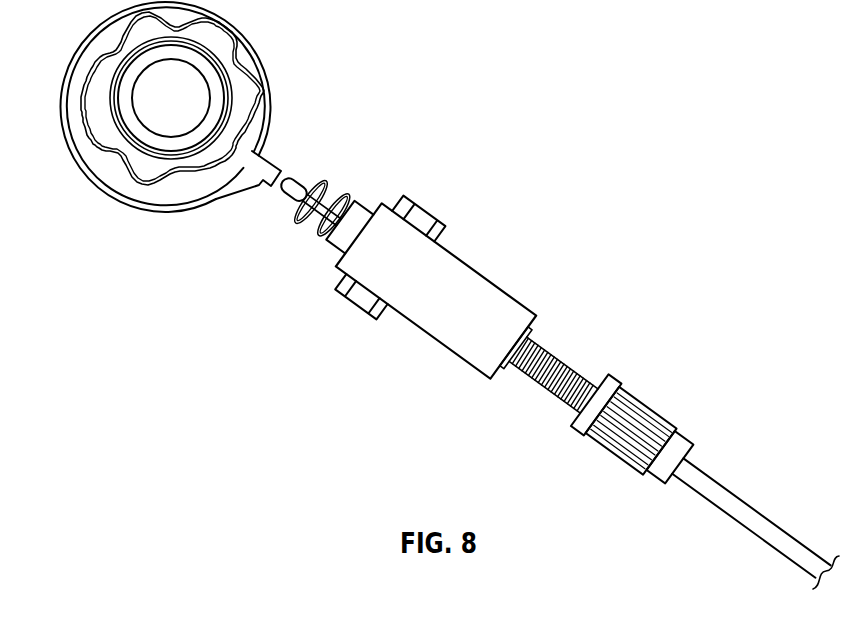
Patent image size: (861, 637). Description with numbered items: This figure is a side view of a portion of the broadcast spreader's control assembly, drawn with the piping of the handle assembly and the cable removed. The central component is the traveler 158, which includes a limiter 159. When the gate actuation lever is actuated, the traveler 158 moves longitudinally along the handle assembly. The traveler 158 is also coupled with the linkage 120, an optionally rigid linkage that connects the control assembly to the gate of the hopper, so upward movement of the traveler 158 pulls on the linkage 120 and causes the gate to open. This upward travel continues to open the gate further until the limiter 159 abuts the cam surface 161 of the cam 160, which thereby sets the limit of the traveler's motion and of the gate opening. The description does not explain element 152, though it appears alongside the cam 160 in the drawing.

The bearing with wave spring 152 is at (102, 150).
The cam surface 161 is at (179, 215).
The cam 160 is at (270, 154).
The limiter 159 is at (302, 178).
The traveler 158 is at (466, 266).
The linkage 120 is at (723, 489).